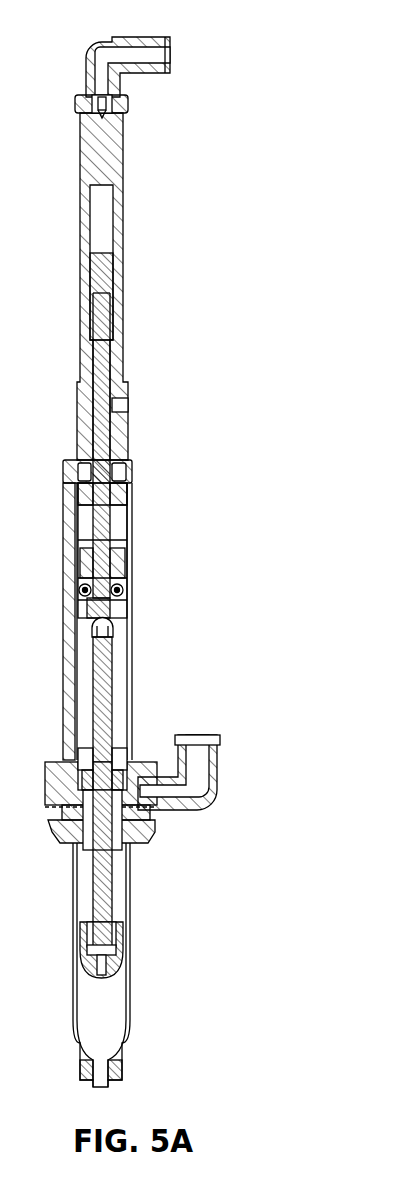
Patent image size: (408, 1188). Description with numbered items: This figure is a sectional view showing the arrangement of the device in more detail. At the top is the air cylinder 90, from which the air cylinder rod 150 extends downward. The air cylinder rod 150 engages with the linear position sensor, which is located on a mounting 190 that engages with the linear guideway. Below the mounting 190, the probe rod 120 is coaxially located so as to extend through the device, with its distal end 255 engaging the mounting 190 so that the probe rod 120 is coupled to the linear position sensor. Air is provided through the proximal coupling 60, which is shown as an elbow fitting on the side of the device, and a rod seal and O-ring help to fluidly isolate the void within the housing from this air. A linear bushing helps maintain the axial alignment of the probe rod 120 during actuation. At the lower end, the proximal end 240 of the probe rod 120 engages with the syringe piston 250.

The air cylinder 90 is at (128, 193).
The air cylinder rod 150 is at (105, 353).
The mounting 190 is at (125, 573).
The distal end 255 is at (112, 637).
The probe rod 120 is at (112, 692).
The proximal coupling 60 is at (218, 745).
The proximal end 240 is at (122, 941).
The syringe piston 250 is at (123, 970).